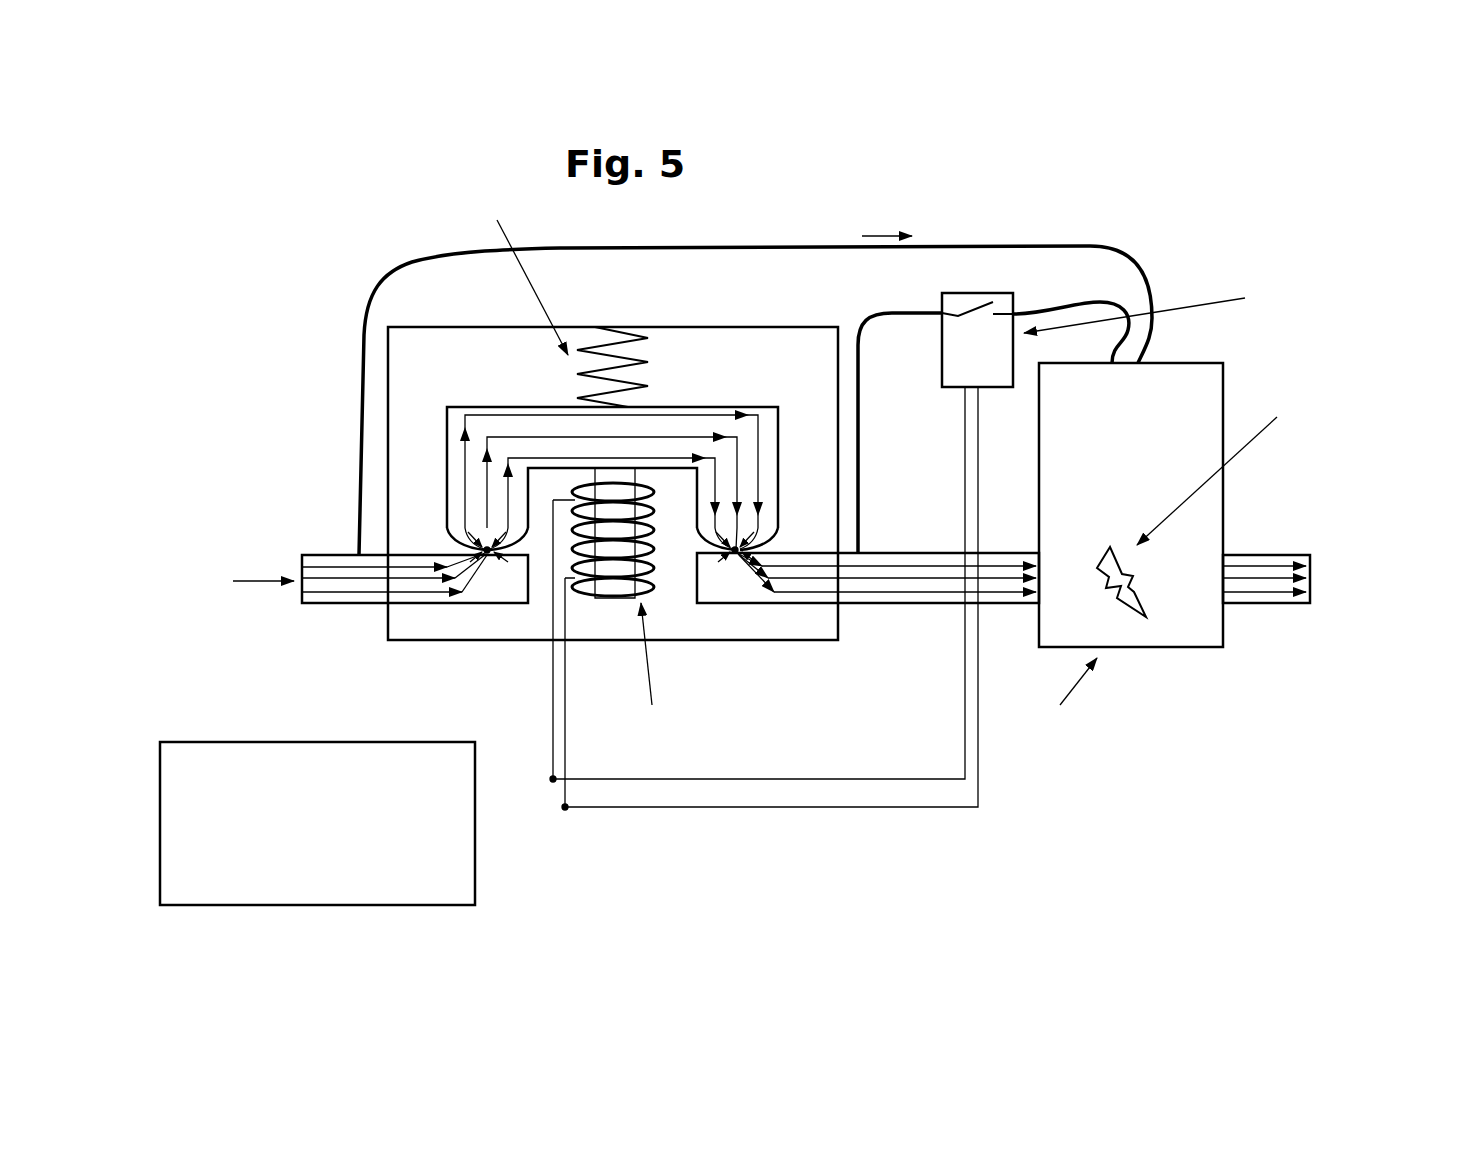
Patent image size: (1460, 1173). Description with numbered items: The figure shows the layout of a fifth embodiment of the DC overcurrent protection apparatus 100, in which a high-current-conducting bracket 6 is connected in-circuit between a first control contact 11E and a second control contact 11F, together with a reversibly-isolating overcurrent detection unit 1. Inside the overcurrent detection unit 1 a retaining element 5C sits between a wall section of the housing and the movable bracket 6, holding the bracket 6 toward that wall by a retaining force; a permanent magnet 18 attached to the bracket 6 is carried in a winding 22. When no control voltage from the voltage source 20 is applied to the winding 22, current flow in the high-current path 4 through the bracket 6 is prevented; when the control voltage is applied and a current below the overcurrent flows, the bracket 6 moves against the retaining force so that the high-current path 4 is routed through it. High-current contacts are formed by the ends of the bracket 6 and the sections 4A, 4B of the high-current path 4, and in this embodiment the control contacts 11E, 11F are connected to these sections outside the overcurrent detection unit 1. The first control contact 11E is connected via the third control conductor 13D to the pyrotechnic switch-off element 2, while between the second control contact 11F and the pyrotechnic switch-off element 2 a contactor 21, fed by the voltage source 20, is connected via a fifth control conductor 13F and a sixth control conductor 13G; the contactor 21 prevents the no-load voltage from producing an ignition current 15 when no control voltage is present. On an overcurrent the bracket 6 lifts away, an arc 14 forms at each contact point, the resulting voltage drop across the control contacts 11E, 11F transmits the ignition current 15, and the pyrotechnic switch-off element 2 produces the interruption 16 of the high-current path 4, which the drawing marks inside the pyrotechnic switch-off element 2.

The DC overcurrent protection apparatus 100 is at (322, 272).
The overcurrent detection unit 1 is at (774, 340).
The pyrotechnic switch-off element 2 is at (1138, 460).
The high-current path 4 is at (1264, 553).
The section of the high-current path 4A is at (488, 588).
The section of the high-current path 4B is at (735, 588).
The retaining element 5C is at (648, 373).
The bracket 6 is at (510, 412).
The first control contact 11E is at (352, 548).
The second control contact 11F is at (860, 548).
The third control conductor 13D is at (735, 245).
The fifth control conductor 13F is at (908, 312).
The sixth control conductor 13G is at (1038, 312).
The arc 14 is at (500, 560).
The ignition current 15 is at (880, 232).
The interruption of high-current path 16 is at (1130, 578).
The permanent magnet 18 is at (625, 475).
The voltage source 20 is at (455, 853).
The contactor 21 is at (960, 360).
The winding 22 is at (652, 545).